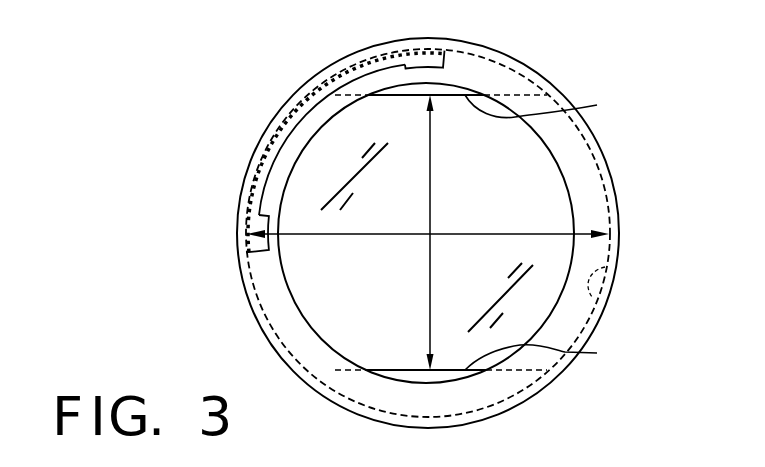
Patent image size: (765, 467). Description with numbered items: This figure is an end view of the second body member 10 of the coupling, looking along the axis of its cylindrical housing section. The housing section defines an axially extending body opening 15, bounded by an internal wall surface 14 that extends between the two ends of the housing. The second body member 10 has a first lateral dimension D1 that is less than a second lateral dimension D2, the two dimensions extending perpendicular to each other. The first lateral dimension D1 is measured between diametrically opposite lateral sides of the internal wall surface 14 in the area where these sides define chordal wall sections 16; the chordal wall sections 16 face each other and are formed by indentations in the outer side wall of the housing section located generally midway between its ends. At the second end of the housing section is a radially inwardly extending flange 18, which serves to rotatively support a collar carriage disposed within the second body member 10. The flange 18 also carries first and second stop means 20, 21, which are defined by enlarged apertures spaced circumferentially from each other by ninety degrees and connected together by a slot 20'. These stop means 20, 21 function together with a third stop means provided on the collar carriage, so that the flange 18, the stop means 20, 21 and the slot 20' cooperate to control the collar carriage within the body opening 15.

The second body member 10 is at (553, 64).
The internal wall surface 14 is at (612, 268).
The body opening 15 is at (493, 165).
The chordal wall sections 16 is at (547, 230).
The radially inwardly extending flange 18 is at (475, 68).
The first stop means 20 is at (236, 261).
The slot 20' is at (336, 152).
The second stop means 21 is at (451, 49).
The first lateral dimension D1 is at (429, 278).
The second lateral dimension D2 is at (512, 234).